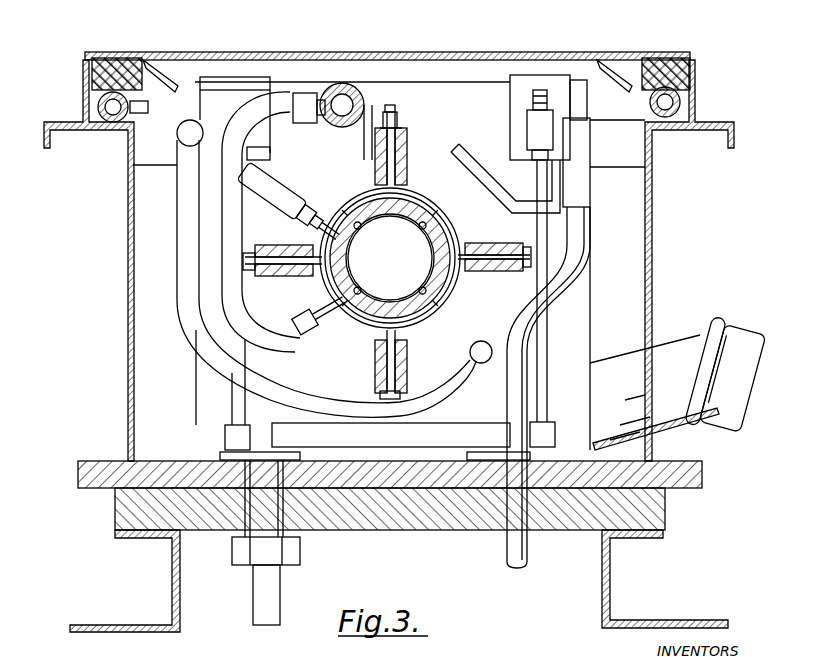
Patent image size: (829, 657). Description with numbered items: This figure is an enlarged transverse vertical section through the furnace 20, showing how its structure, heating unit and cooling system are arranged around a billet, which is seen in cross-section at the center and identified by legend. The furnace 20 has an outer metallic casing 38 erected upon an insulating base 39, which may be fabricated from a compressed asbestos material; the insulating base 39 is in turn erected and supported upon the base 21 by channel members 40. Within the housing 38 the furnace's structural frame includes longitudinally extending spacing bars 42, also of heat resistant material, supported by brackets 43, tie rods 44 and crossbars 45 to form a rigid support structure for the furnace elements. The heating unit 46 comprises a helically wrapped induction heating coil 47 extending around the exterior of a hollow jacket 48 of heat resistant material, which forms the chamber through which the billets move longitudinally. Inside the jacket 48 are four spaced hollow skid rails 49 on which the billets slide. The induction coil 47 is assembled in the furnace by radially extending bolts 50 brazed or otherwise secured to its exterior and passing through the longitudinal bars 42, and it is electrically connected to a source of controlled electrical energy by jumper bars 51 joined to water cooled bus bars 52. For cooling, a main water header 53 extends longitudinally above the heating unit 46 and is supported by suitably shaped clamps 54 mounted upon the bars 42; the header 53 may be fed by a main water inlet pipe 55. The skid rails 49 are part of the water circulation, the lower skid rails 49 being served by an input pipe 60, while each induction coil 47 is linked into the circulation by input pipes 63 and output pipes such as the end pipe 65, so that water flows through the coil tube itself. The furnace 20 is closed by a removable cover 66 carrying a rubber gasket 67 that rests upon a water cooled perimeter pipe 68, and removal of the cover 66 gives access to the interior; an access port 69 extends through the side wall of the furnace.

The furnace 20 is at (98, 223).
The base 21 is at (98, 625).
The outer metallic casing 38 is at (652, 285).
The insulating base 39 is at (668, 444).
The channel members 40 is at (612, 568).
The longitudinally extending spacing bars 42 is at (408, 142).
The brackets 43 is at (510, 78).
The tie rods 44 is at (548, 256).
The crossbars 45 is at (438, 434).
The heating unit 46 is at (350, 183).
The induction heating coil 47 is at (457, 228).
The hollow jacket 48 is at (450, 303).
The hollow skid rails 49 is at (347, 206).
The radially extending bolts 50 is at (394, 126).
The jumper bars 51 is at (463, 166).
The water cooled bus bars 52 is at (584, 228).
The main water header 53 is at (355, 84).
The clamps 54 is at (350, 130).
The main water inlet pipe 55 is at (177, 270).
The input pipe 60 is at (332, 402).
The input pipes 63 is at (316, 200).
The end pipe 65 is at (350, 332).
The removable cover 66 is at (547, 53).
The rubber gasket 67 is at (90, 75).
The water cooled perimeter pipe 68 is at (100, 108).
The access ports 69 is at (720, 322).